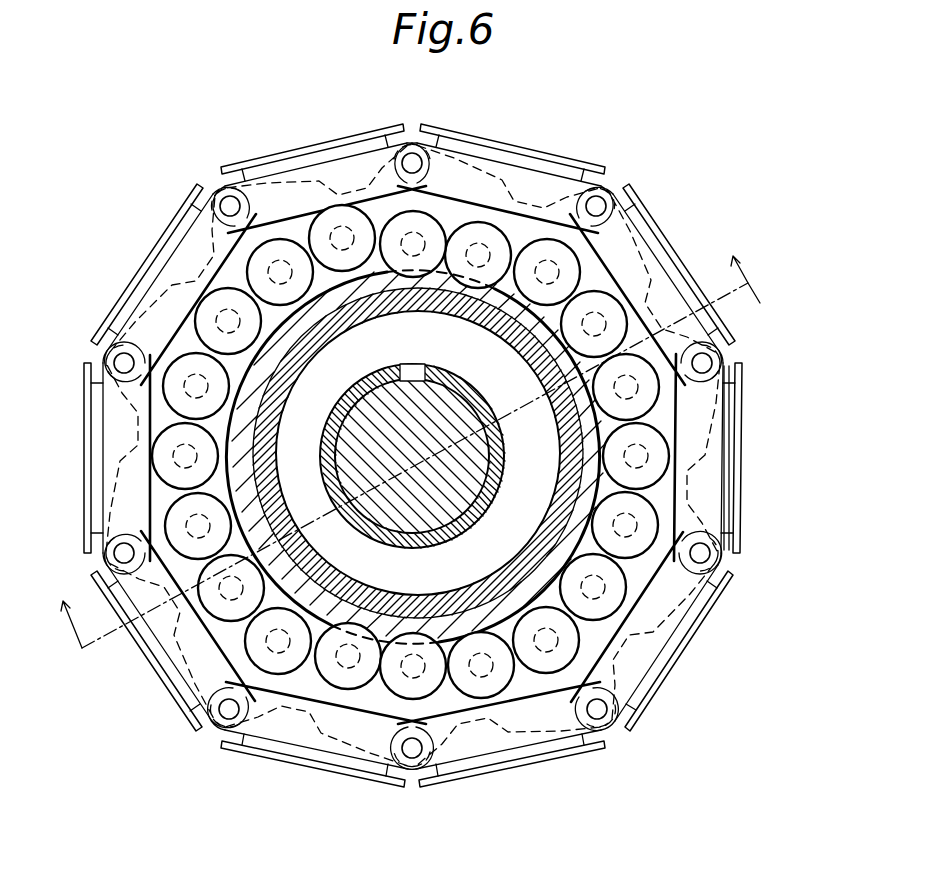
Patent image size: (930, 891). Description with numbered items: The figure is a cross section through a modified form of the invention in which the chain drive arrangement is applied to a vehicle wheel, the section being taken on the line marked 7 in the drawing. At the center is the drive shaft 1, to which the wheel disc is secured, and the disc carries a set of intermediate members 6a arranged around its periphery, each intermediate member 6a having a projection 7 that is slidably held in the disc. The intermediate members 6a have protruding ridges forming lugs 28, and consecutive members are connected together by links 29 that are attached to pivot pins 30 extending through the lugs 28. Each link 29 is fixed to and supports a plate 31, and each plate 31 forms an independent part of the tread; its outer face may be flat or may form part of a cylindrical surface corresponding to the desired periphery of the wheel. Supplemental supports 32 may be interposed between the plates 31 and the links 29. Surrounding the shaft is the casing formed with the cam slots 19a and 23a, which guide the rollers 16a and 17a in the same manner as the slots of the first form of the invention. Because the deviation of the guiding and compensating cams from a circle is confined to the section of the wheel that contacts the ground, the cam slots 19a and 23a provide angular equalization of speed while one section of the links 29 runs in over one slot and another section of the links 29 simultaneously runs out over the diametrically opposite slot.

The drive shaft 1 is at (473, 470).
The intermediate member 6a is at (382, 208).
The projection 7 is at (416, 465).
The roller 16a is at (548, 352).
The roller 17a is at (588, 370).
The cam slot 19a is at (483, 310).
The cam slot 23a is at (390, 302).
The lug 28 is at (640, 227).
The link 29 is at (538, 164).
The pivot pin 30 is at (420, 160).
The plate 31 is at (513, 150).
The supplemental support 32 is at (325, 152).